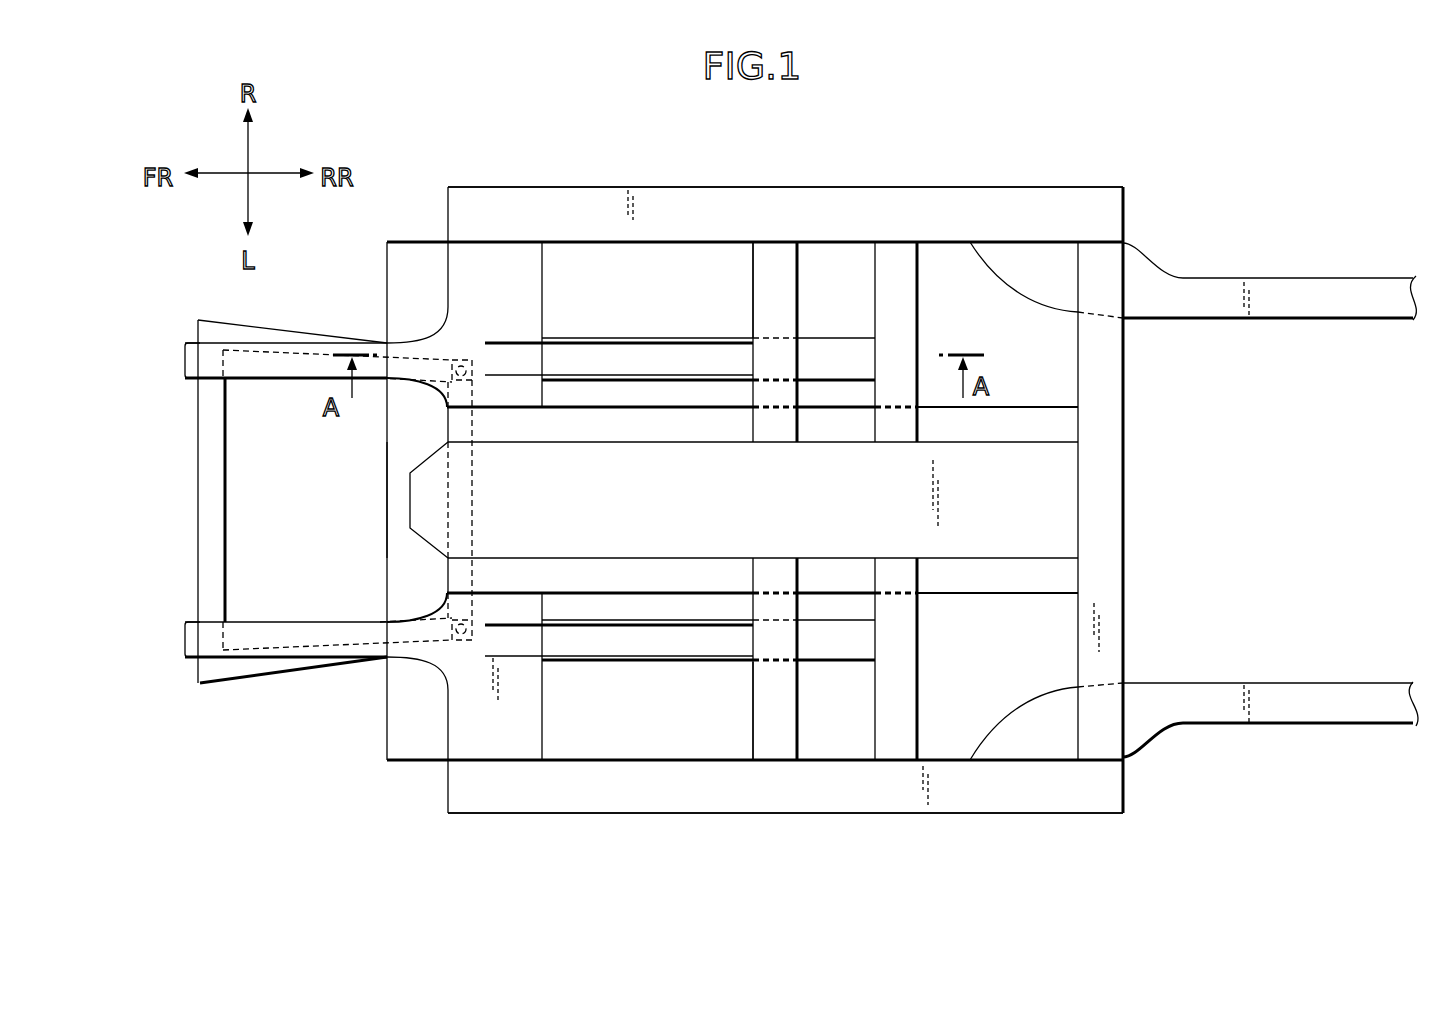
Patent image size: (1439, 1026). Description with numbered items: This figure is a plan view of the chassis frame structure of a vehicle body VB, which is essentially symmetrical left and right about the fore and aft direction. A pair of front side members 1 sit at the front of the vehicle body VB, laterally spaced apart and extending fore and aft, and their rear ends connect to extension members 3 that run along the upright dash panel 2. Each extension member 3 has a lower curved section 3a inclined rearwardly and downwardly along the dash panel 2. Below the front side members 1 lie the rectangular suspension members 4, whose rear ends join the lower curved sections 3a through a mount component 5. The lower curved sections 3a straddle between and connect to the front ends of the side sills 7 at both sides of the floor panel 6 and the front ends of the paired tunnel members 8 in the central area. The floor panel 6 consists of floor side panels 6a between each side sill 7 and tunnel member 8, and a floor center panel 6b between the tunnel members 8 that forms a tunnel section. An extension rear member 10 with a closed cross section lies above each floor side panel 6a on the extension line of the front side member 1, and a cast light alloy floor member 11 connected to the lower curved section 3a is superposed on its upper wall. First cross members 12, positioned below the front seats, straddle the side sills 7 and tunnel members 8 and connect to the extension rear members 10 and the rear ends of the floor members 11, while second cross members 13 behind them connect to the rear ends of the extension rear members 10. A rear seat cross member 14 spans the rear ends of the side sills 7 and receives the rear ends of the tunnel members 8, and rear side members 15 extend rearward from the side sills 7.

The front side member 1 is at (298, 350).
The dash panel 2 is at (382, 497).
The extension member 3 is at (507, 260).
The lower curved section 3a is at (458, 326).
The suspension member 4 is at (190, 575).
The mount component 5 is at (455, 358).
The floor panel 6 is at (647, 582).
The floor side panel 6a is at (633, 735).
The floor center panel 6b is at (585, 523).
The side sill 7 is at (684, 203).
The tunnel member 8 is at (652, 430).
The extension rear member 10 is at (820, 350).
The floor member 11 is at (665, 353).
The first cross member 12 is at (773, 262).
The second cross member 13 is at (898, 262).
The rear seat cross member 14 is at (1112, 548).
The rear side member 15 is at (1322, 307).
The vehicle body VB is at (1052, 165).